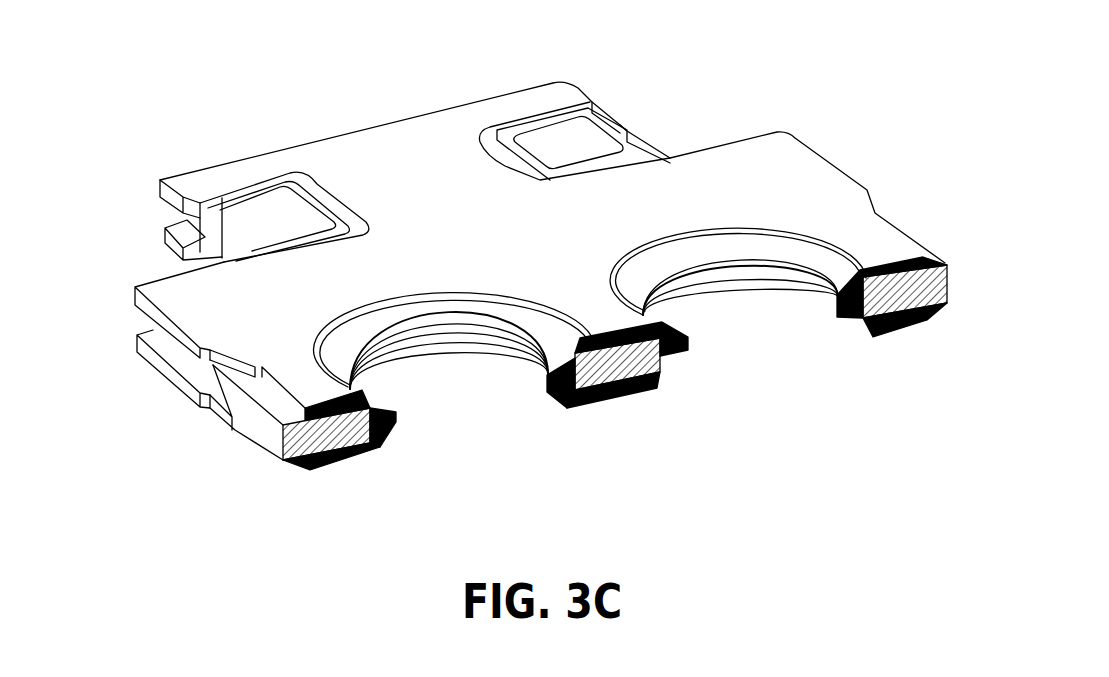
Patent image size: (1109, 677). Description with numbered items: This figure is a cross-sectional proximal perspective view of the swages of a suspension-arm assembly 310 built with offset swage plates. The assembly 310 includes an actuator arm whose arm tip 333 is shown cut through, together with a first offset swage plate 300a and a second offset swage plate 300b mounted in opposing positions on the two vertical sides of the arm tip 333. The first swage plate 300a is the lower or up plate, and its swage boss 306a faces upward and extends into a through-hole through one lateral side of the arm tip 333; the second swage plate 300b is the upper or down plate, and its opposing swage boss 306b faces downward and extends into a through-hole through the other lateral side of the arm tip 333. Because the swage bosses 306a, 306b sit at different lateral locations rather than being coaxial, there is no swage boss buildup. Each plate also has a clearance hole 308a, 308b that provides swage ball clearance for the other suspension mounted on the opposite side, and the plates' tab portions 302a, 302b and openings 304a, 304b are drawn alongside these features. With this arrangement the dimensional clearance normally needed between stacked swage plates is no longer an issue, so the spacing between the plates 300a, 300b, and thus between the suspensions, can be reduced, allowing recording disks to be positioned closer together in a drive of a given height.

The suspension-arm assembly 310 is at (277, 78).
The first offset swage plate 300a is at (145, 362).
The second offset swage plate 300b is at (162, 297).
The first tab 302a is at (200, 380).
The second tab 302b is at (701, 160).
The first opening 304a is at (458, 397).
The second opening 304b is at (763, 247).
The swage boss 306a is at (387, 450).
The swage boss 306b is at (863, 272).
The clearance hole 308a is at (753, 333).
The clearance hole 308b is at (413, 313).
The arm tip 333 is at (276, 437).